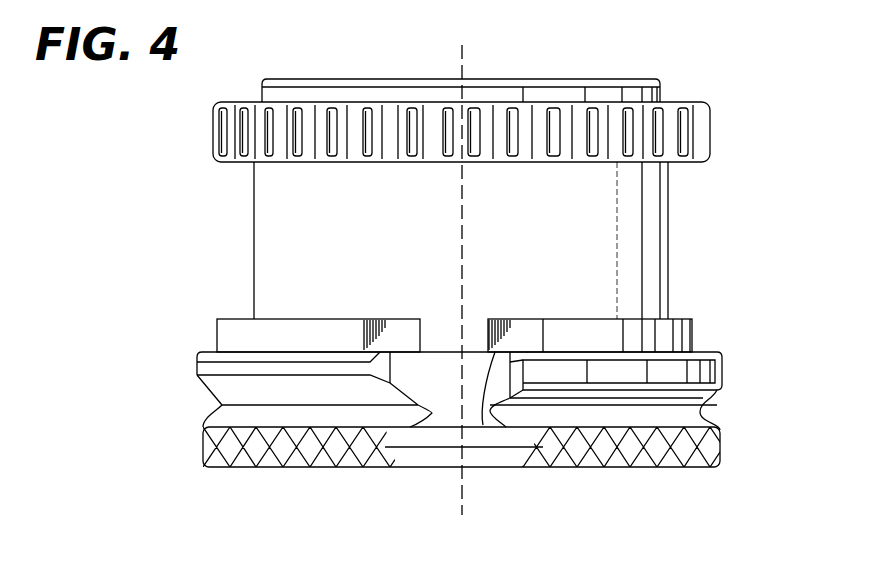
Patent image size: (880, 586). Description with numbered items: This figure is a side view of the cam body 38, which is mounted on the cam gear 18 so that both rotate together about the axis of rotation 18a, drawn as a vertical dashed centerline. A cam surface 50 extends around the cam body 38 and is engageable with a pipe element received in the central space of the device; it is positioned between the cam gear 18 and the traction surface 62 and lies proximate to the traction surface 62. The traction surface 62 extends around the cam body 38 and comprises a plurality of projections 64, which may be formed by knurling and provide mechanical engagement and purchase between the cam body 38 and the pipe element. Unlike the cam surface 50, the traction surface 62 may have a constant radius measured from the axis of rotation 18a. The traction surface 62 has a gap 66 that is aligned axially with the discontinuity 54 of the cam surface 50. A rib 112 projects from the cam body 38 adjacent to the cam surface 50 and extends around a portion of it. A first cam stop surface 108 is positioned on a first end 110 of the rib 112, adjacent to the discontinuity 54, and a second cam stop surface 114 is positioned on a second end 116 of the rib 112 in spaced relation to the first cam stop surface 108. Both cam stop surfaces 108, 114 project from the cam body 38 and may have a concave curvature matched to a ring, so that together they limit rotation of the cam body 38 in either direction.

The cam gear 18 is at (668, 128).
The axis of rotation 18a is at (460, 228).
The cam body 38 is at (650, 219).
The cam surface 50 is at (715, 370).
The discontinuity 54 is at (470, 352).
The traction surface 62 is at (600, 467).
The projections 64 is at (328, 456).
The gap 66 is at (442, 456).
The first cam stop surface 108 is at (538, 330).
The first end 110 is at (483, 425).
The rib 112 is at (640, 328).
The second cam stop surface 114 is at (400, 328).
The second end 116 is at (422, 333).